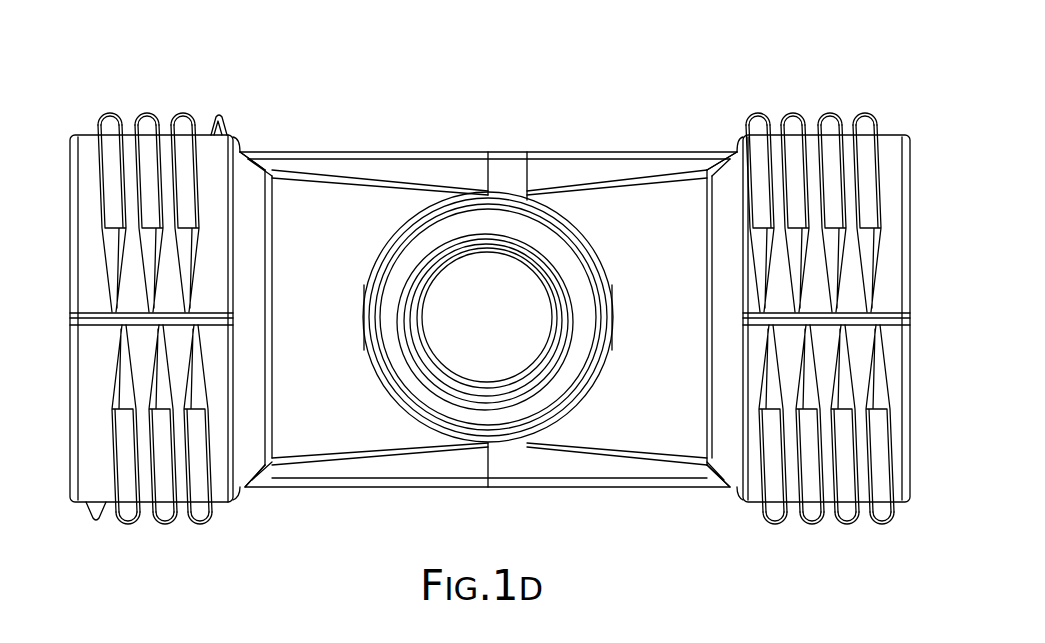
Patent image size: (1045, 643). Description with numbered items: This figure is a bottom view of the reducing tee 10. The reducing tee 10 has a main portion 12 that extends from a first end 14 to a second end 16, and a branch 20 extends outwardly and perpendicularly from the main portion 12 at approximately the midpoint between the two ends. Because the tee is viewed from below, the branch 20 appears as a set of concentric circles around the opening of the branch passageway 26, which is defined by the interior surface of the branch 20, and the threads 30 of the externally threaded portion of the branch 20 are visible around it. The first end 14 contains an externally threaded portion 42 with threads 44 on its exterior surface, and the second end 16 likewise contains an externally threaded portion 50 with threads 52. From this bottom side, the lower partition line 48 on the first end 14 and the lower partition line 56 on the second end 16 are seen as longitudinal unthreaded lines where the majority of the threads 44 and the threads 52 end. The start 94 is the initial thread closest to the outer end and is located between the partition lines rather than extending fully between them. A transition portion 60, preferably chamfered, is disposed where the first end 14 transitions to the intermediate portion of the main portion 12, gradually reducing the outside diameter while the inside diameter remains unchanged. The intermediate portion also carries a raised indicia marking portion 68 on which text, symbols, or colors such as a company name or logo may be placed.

The reducing tee 10 is at (596, 110).
The main portion 12 is at (630, 222).
The first end 14 is at (67, 412).
The second end 16 is at (912, 428).
The branch 20 is at (478, 230).
The branch passageway 26 is at (504, 325).
The threads 30 is at (527, 205).
The externally threaded portion 42 is at (70, 107).
The threads 44 is at (98, 125).
The lower partition line 48 is at (92, 320).
The externally threaded portion 50 is at (745, 107).
The threads 52 is at (883, 128).
The lower partition line 56 is at (892, 320).
The transition portion 60 is at (250, 445).
The indicia marking portion 68 is at (388, 170).
The start 94 is at (88, 517).